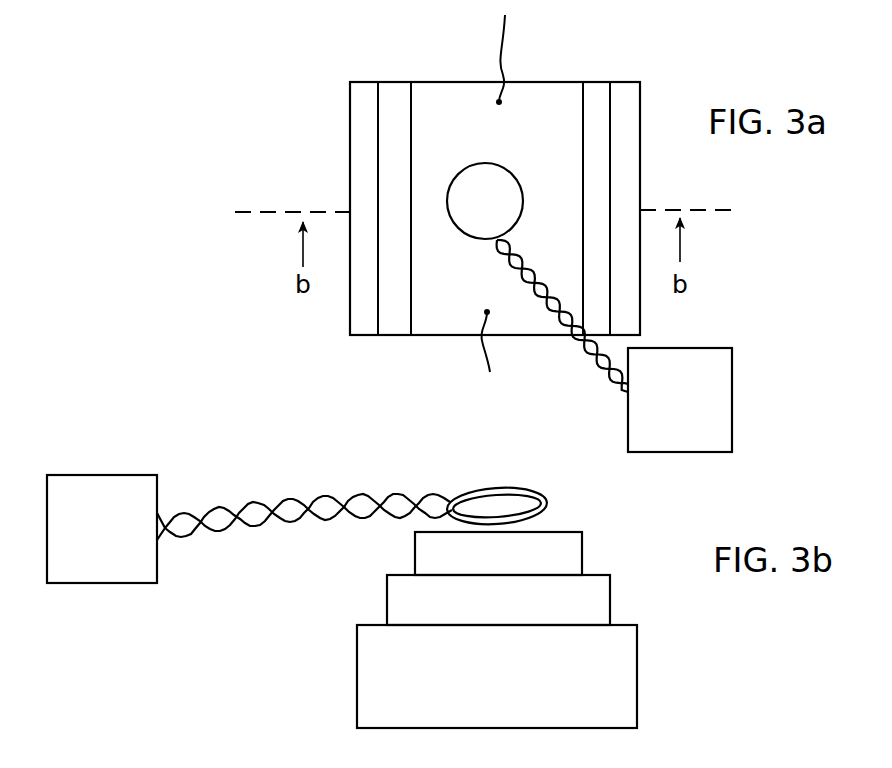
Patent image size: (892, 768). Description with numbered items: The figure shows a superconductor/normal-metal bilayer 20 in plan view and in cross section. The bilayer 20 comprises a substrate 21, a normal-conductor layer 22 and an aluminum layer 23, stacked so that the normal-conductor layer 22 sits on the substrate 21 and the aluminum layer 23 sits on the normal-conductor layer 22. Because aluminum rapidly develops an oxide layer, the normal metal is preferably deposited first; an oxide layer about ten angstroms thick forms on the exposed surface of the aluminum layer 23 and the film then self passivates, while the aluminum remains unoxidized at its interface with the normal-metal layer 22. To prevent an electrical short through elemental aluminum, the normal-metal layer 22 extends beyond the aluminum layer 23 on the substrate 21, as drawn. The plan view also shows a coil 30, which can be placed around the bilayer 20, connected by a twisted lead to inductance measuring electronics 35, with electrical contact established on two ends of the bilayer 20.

In FIG. 3A, the bilayer 20 is at (338, 144).
In FIG. 3B, the bilayer 20 is at (336, 615).
In FIG. 3A, the substrate 21 is at (354, 83).
In FIG. 3B, the substrate 21 is at (497, 696).
In FIG. 3A, the normal-conductor layer 22 is at (399, 83).
In FIG. 3B, the normal-conductor layer 22 is at (503, 616).
In FIG. 3A, the aluminum layer 23 is at (500, 215).
In FIG. 3B, the aluminum layer 23 is at (503, 569).
In FIG. 3A, the coil 30 is at (466, 168).
In FIG. 3B, the coil 30 is at (450, 478).
In FIG. 3A, the inductance measuring electronics 35 is at (686, 404).
In FIG. 3B, the inductance measuring electronics 35 is at (109, 539).